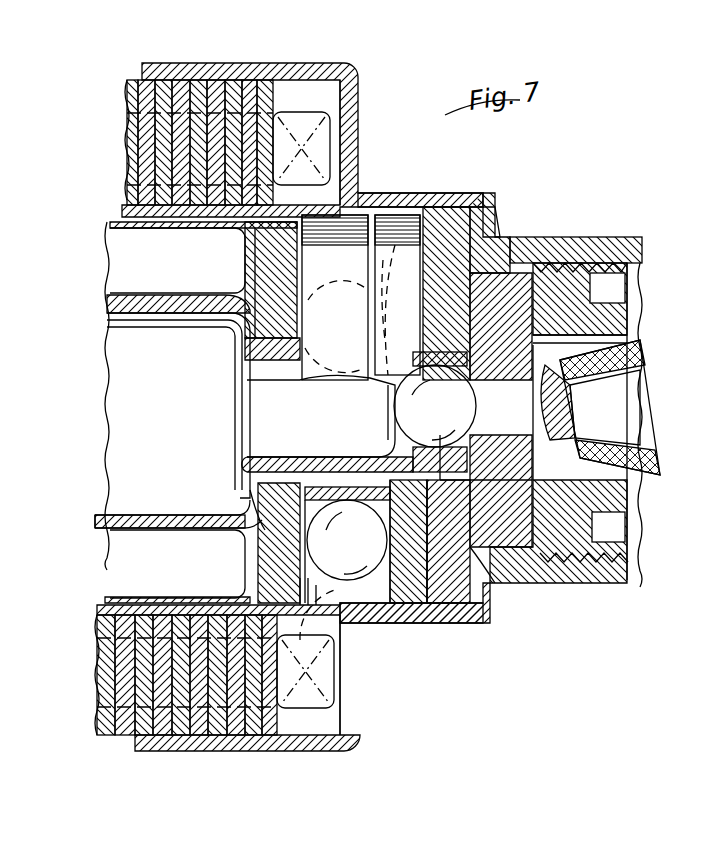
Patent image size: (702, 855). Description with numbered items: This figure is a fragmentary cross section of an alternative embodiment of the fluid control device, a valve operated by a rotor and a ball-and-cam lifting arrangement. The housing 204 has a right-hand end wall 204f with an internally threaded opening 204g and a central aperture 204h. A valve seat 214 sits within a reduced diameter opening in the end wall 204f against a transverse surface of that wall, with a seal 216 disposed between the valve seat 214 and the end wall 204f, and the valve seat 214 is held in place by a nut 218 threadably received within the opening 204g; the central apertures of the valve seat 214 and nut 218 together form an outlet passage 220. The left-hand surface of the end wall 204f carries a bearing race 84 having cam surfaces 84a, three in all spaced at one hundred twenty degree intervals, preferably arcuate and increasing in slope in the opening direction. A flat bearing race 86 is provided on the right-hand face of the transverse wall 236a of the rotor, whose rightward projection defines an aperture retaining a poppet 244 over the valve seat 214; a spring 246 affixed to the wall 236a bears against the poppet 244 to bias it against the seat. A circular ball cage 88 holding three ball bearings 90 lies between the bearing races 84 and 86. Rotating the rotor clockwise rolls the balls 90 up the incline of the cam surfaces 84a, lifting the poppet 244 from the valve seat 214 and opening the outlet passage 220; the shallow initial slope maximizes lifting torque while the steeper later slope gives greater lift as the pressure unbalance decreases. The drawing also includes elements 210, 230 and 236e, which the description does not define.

The bearing race 84 is at (400, 243).
The cam surfaces 84a is at (452, 205).
The bearing race 86 is at (280, 548).
The ball cage 88 is at (252, 395).
The ball bearings 90 is at (350, 275).
The housing 204 is at (395, 222).
The end wall 204f is at (485, 230).
The internally threaded opening 204g is at (585, 262).
The central aperture 204h is at (400, 330).
The bearing seat 210 is at (486, 457).
The valve seat 214 is at (520, 262).
The seal 216 is at (480, 570).
The nut 218 is at (582, 565).
The outlet passage 220 is at (585, 455).
The rotor 230 is at (100, 515).
The transverse wall 236a is at (245, 325).
The rotor cup inner wall 236e is at (260, 360).
The poppet 244 is at (395, 410).
The spring 246 is at (258, 455).